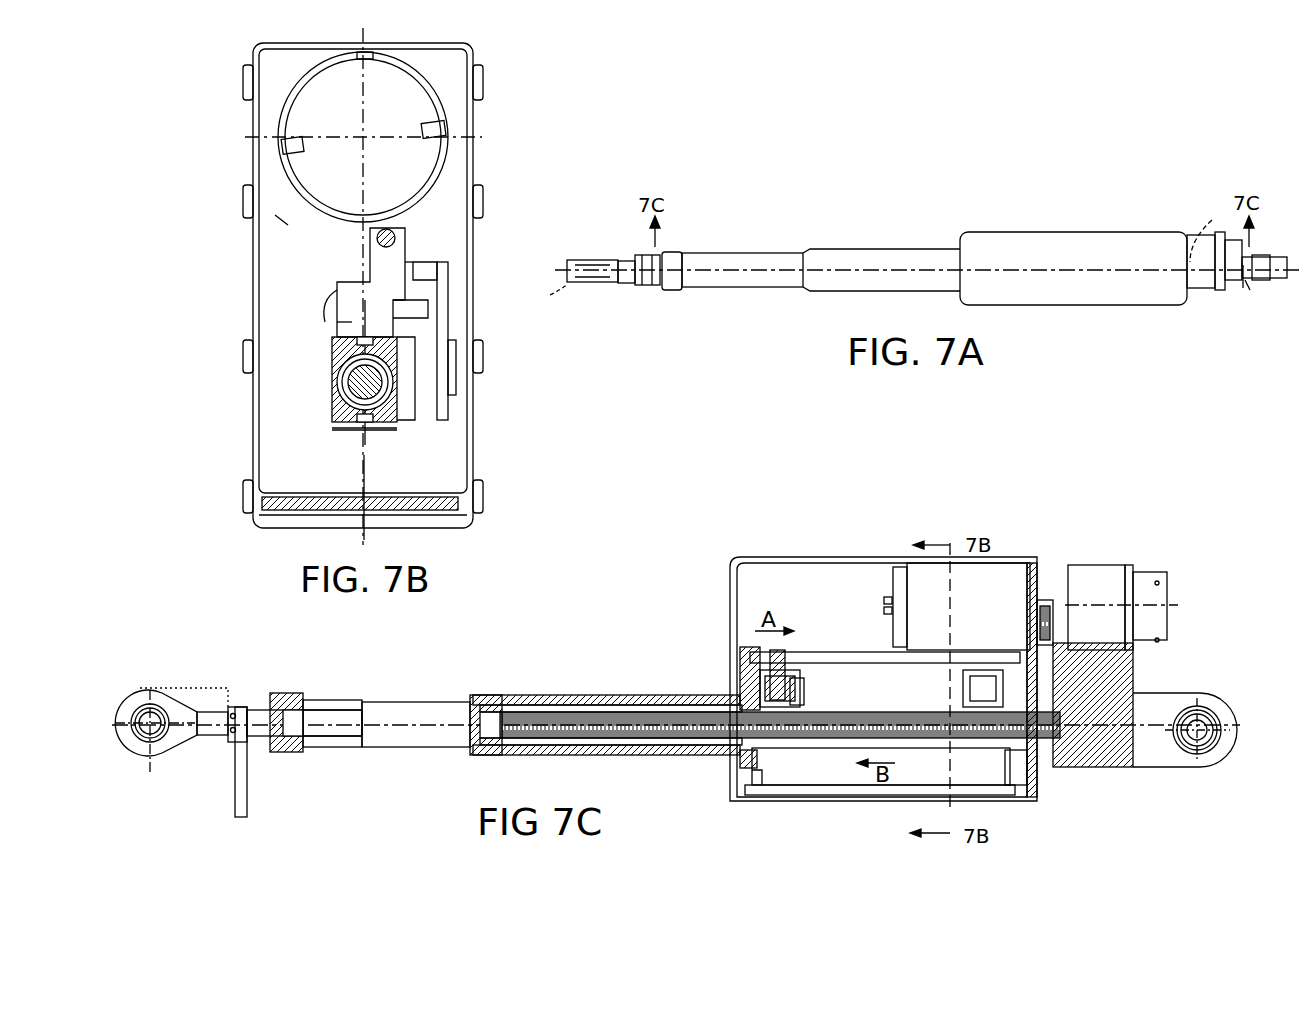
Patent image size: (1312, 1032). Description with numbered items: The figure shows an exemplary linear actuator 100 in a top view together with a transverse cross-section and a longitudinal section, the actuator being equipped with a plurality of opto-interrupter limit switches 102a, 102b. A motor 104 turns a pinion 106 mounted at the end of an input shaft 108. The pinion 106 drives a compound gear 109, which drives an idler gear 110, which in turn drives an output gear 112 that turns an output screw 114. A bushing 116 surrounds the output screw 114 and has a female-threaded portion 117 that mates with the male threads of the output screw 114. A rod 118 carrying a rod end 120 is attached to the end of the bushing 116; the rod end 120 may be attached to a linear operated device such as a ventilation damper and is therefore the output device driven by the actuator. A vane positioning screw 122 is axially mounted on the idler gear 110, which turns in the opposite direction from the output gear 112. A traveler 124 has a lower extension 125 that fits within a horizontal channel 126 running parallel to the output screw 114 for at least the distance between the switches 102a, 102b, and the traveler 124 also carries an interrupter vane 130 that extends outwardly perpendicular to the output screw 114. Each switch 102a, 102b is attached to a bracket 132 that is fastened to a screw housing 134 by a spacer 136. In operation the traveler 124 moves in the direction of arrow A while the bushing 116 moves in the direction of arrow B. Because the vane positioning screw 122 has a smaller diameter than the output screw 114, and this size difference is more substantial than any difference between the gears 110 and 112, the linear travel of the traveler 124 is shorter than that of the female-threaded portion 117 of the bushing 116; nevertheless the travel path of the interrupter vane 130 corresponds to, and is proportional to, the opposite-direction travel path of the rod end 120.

In FIG. 7A, the linear actuator 100 is at (860, 218).
In FIG. 7B, the opto-interrupter limit switch 102a is at (432, 263).
In FIG. 7C, the opto-interrupter limit switch 102a is at (800, 700).
In FIG. 7C, the opto-interrupter limit switch 102b is at (968, 695).
In FIG. 7B, the motor 104 is at (392, 103).
In FIG. 7C, the motor 104 is at (1003, 568).
In FIG. 7C, the pinion 106 is at (1075, 565).
In FIG. 7C, the input shaft 108 is at (1058, 565).
In FIG. 7C, the compound gear 109 is at (1057, 640).
In FIG. 7C, the idler gear 110 is at (1055, 660).
In FIG. 7C, the output gear 112 is at (1027, 782).
In FIG. 7B, the output screw 114 is at (345, 365).
In FIG. 7C, the output screw 114 is at (545, 740).
In FIG. 7B, the bushing 116 is at (350, 386).
In FIG. 7C, the bushing 116 is at (822, 745).
In FIG. 7C, the female-threaded portion 117 is at (991, 767).
In FIG. 7A, the rod 118 is at (636, 278).
In FIG. 7A, the rod end 120 is at (573, 262).
In FIG. 7B, the vane positioning screw 122 is at (395, 230).
In FIG. 7C, the vane positioning screw 122 is at (810, 665).
In FIG. 7B, the traveler 124 is at (339, 282).
In FIG. 7C, the traveler 124 is at (772, 655).
In FIG. 7B, the lower extension 125 is at (350, 335).
In FIG. 7B, the horizontal channel 126 is at (400, 342).
In FIG. 7B, the interrupter vane 130 is at (428, 305).
In FIG. 7C, the interrupter vane 130 is at (800, 693).
In FIG. 7B, the bracket 132 is at (450, 388).
In FIG. 7B, the screw housing 134 is at (385, 428).
In FIG. 7B, the spacer 136 is at (422, 405).